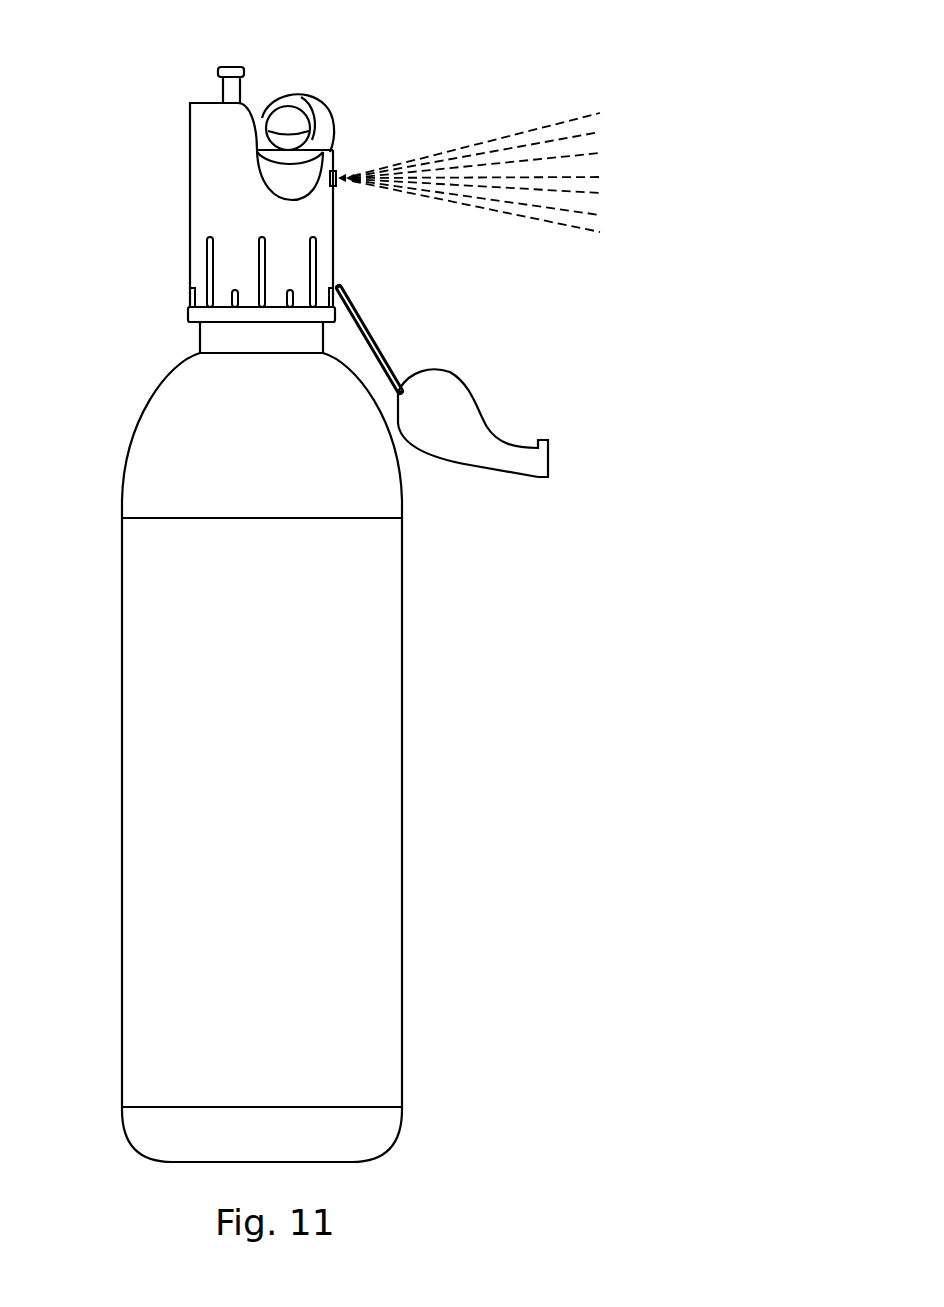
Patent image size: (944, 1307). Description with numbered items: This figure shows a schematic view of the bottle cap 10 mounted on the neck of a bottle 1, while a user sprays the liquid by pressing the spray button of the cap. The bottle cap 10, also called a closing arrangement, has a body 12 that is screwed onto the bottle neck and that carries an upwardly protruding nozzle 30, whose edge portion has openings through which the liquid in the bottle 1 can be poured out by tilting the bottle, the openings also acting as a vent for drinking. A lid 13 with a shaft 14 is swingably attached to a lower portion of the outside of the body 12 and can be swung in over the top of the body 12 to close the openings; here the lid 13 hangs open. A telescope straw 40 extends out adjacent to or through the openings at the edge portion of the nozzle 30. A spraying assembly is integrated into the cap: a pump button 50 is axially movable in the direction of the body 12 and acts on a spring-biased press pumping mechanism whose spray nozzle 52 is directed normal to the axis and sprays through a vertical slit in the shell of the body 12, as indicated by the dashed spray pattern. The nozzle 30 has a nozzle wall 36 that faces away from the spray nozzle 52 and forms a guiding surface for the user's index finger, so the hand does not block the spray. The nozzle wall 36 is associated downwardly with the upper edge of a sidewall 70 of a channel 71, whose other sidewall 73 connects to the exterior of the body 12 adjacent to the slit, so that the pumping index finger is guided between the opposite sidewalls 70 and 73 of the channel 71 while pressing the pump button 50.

The bottle 1 is at (418, 792).
The bottle cap 10 is at (318, 165).
The body 12 is at (185, 265).
The lid 13 is at (472, 430).
The shaft 14 is at (387, 350).
The nozzle 30 is at (188, 112).
The nozzle wall 36 is at (254, 133).
The telescope straw 40 is at (220, 70).
The pump button 50 is at (323, 150).
The spray nozzle 52 is at (336, 183).
The sidewall 70 is at (258, 172).
The channel 71 is at (265, 193).
The sidewall 73 is at (329, 188).